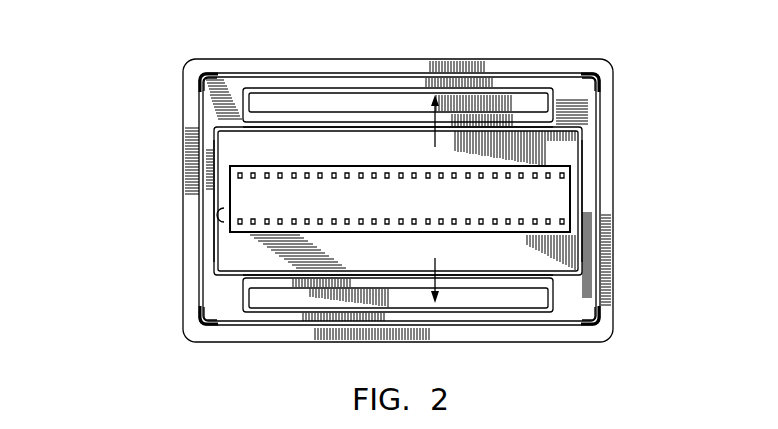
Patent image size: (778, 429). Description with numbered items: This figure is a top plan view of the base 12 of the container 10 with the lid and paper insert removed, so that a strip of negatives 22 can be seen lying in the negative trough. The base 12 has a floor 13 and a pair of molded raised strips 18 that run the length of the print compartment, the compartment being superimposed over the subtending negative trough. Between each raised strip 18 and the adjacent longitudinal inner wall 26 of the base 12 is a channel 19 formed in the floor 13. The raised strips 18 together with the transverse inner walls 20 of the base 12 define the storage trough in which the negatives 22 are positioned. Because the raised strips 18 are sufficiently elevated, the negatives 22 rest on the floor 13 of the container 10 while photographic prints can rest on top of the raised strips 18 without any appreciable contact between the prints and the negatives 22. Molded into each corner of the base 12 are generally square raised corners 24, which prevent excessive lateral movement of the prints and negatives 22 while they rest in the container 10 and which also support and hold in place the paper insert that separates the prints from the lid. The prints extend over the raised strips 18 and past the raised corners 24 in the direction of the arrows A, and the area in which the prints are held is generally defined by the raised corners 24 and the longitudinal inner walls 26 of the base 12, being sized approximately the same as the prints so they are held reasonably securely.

The container 10 is at (95, 201).
The base 12 is at (183, 239).
The floor 13 is at (542, 262).
The raised strips 18 is at (376, 128).
The channels 19 is at (279, 102).
The transverse inner walls 20 is at (220, 212).
The strip of negatives 22 is at (552, 198).
The raised corners 24 is at (228, 104).
The longitudinal inner walls 26 is at (350, 92).